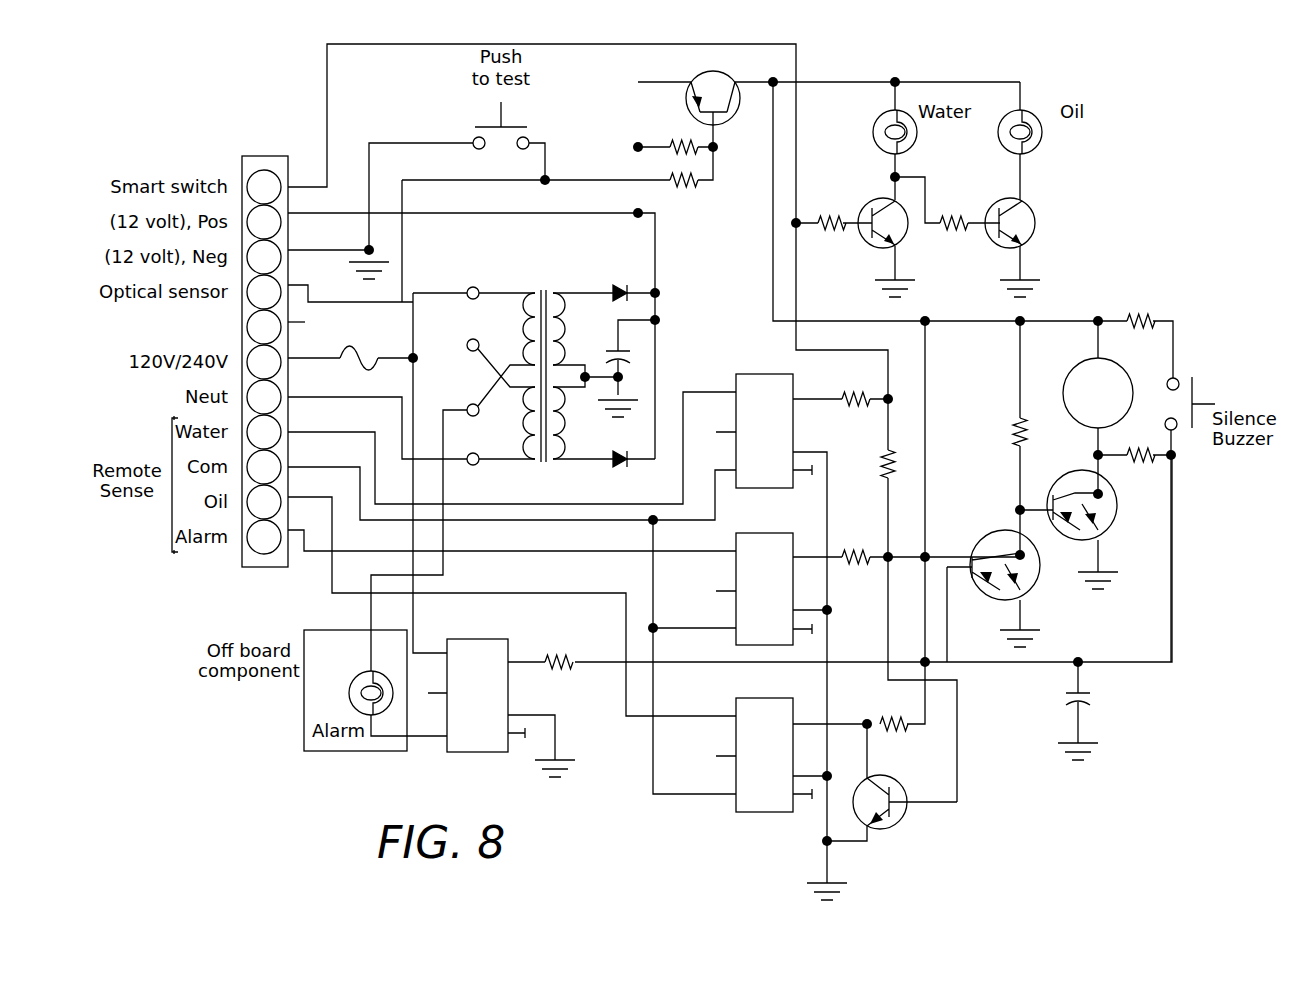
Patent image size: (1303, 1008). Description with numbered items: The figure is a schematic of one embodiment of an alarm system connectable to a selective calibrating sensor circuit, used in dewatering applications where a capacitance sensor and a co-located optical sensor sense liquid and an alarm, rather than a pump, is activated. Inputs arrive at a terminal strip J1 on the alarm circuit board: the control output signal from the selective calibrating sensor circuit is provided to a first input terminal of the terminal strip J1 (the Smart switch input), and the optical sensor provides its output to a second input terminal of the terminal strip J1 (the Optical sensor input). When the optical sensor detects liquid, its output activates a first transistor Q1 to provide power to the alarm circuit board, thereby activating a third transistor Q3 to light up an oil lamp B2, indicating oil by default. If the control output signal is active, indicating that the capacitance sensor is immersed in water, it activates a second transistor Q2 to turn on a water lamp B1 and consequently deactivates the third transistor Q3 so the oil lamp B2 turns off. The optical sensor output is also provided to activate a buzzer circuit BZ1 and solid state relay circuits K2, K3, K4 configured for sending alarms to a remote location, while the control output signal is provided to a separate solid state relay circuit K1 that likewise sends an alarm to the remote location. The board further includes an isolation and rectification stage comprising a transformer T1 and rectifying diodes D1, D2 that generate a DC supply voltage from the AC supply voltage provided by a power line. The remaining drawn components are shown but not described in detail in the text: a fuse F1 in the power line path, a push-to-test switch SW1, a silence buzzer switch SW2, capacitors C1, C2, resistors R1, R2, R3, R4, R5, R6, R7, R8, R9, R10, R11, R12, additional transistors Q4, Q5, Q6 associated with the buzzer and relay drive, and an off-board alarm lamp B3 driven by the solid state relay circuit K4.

The terminal strip J1 is at (263, 326).
The fuse F1 is at (359, 349).
The push to test switch SW1 is at (492, 137).
The silence buzzer switch SW2 is at (1214, 403).
The transformer T1 is at (532, 366).
The rectifying diode D1 is at (631, 281).
The rectifying diode D2 is at (631, 471).
The capacitor C1 is at (623, 368).
The capacitor C2 is at (1071, 686).
The resistor R1 is at (683, 133).
The resistor R2 is at (683, 192).
The resistor R3 is at (831, 210).
The resistor R4 is at (953, 210).
The resistor R5 is at (856, 386).
The resistor R6 is at (873, 460).
The resistor R7 is at (856, 544).
The resistor R8 is at (894, 712).
The resistor R9 is at (1141, 306).
The resistor R10 is at (1136, 467).
The resistor R11 is at (1000, 430).
The resistor R12 is at (559, 651).
The first transistor Q1 is at (708, 88).
The second transistor Q2 is at (876, 209).
The third transistor Q3 is at (1003, 209).
The transistor Q4 is at (992, 560).
The transistor Q5 is at (1097, 505).
The transistor Q6 is at (889, 794).
The water lamp B1 is at (890, 120).
The oil lamp B2 is at (1016, 120).
The off board alarm lamp B3 is at (367, 684).
The buzzer circuit BZ1 is at (1082, 389).
The solid state relay circuit K1 is at (764, 422).
The solid state relay circuit K2 is at (764, 581).
The solid state relay circuit K3 is at (764, 747).
The solid state relay circuit K4 is at (476, 687).